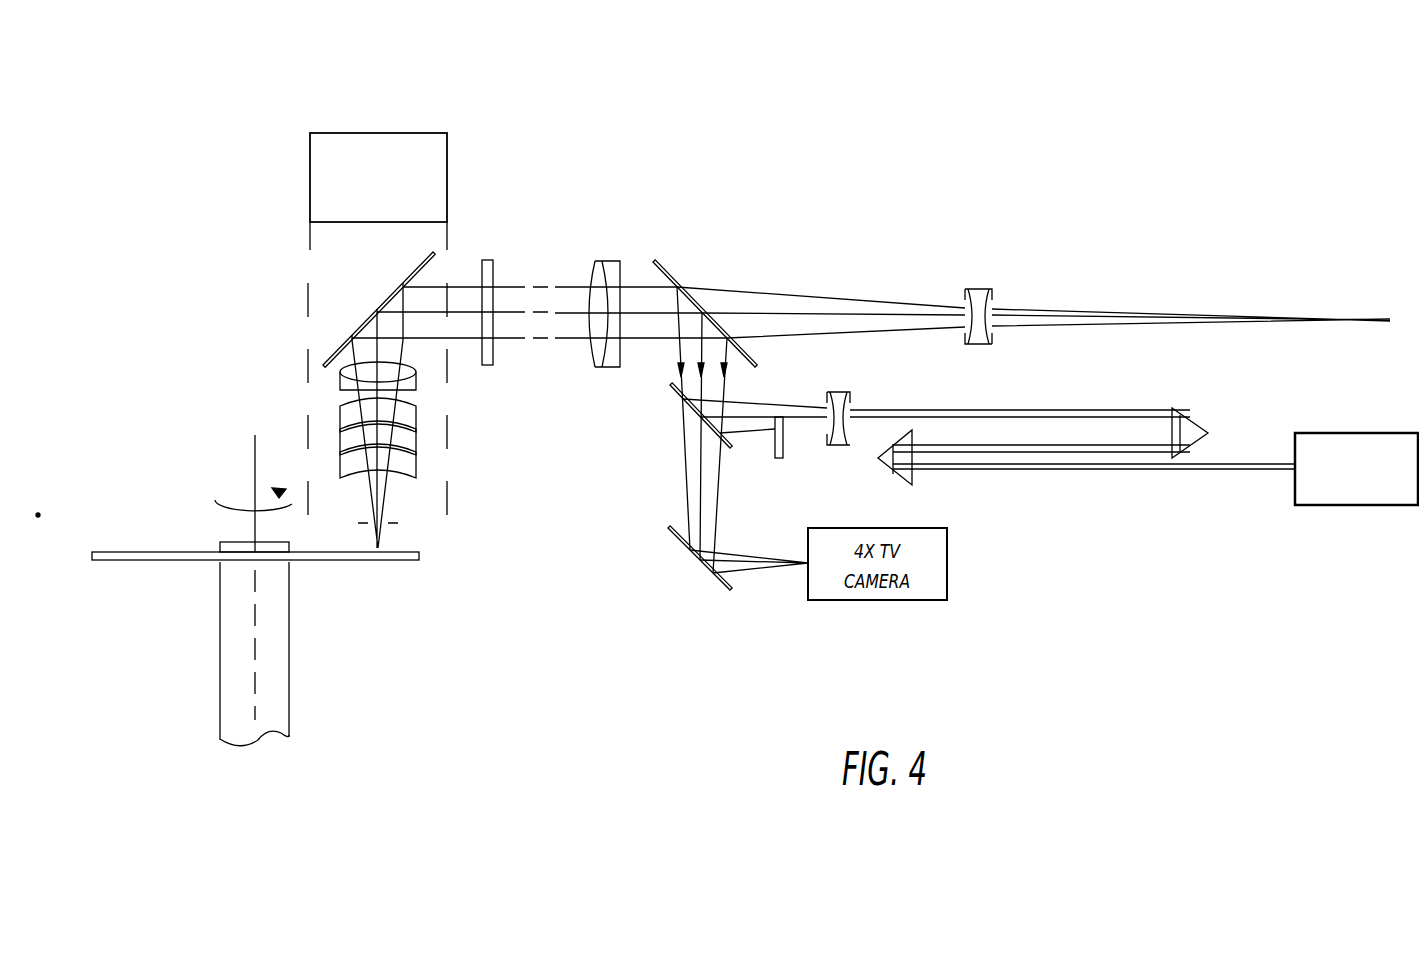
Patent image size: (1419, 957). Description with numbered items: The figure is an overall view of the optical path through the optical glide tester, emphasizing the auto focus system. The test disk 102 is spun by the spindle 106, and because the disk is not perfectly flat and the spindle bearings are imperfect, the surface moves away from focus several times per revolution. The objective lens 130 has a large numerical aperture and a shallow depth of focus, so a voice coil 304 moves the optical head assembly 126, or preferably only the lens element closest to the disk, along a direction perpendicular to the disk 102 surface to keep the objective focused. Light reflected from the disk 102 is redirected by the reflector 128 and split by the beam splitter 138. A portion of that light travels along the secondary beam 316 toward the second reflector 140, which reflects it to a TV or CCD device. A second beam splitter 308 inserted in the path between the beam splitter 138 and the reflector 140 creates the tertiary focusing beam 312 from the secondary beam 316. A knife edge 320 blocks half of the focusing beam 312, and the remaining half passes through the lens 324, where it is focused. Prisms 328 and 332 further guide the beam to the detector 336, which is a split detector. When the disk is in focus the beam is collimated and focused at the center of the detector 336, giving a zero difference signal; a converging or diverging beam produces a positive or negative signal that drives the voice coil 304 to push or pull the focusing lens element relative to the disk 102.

The disk 102 is at (405, 561).
The spindle 106 is at (283, 658).
The optical head assembly 126 is at (447, 442).
The reflector 128 is at (372, 308).
The objective lens 130 is at (416, 380).
The beam splitter 138 is at (663, 262).
The second reflector 140 is at (700, 568).
The voice coil 304 is at (447, 170).
The second beam splitter 308 is at (672, 396).
The tertiary focusing beam 312 is at (758, 403).
The secondary beam 316 is at (677, 350).
The knife edge 320 is at (783, 452).
The lens 324 is at (848, 392).
The prism 328 is at (1193, 425).
The prism 332 is at (912, 483).
The detector 336 is at (1378, 432).